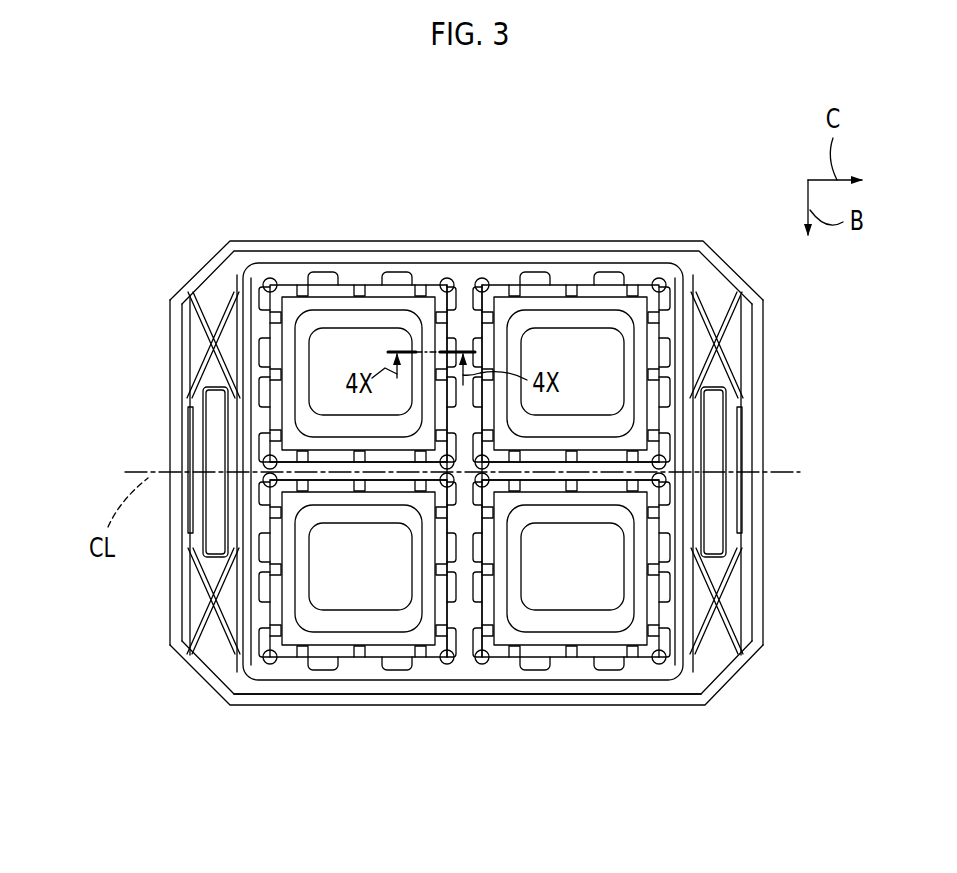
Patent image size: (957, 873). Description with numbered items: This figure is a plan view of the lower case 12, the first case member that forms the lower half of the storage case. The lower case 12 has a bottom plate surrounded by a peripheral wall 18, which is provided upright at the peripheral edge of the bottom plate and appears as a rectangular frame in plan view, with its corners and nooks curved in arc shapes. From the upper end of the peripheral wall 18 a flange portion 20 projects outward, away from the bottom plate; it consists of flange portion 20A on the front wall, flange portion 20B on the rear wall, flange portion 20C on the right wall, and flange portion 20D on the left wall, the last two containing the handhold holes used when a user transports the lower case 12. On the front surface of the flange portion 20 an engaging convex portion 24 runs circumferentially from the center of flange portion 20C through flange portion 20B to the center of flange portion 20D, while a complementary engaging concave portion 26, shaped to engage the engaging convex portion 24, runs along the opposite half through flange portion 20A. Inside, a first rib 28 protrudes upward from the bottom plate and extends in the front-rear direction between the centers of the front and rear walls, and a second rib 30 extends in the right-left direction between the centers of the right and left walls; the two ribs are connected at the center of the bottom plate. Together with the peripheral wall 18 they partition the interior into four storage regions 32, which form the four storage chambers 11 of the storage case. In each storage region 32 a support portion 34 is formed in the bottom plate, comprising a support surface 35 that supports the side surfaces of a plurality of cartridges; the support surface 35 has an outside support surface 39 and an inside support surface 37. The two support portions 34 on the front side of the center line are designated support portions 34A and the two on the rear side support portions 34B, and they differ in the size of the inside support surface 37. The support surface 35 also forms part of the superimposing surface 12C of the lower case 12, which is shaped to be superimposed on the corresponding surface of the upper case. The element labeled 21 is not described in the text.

The storage chamber 11 is at (464, 471).
The lower case 12 is at (667, 165).
The superimposing surface 12C is at (607, 540).
The peripheral wall 18 is at (560, 684).
The flange portion 20 is at (765, 407).
The flange portion 20A is at (450, 700).
The flange portion 20B is at (528, 241).
The flange portion 20C is at (170, 377).
The flange portion 20D is at (763, 445).
The engagement hook 21 is at (197, 403).
The engaging convex portion 24 is at (298, 692).
The engaging concave portion 26 is at (255, 255).
The first rib 28 is at (465, 298).
The second rib 30 is at (327, 477).
The storage region 32 is at (492, 475).
The support portion 34 is at (413, 495).
The support portion 34A is at (283, 656).
The support portion 34B is at (118, 290).
The support surface 35 is at (323, 373).
The inside support surface 37 is at (324, 342).
The outside support surface 39 is at (423, 310).